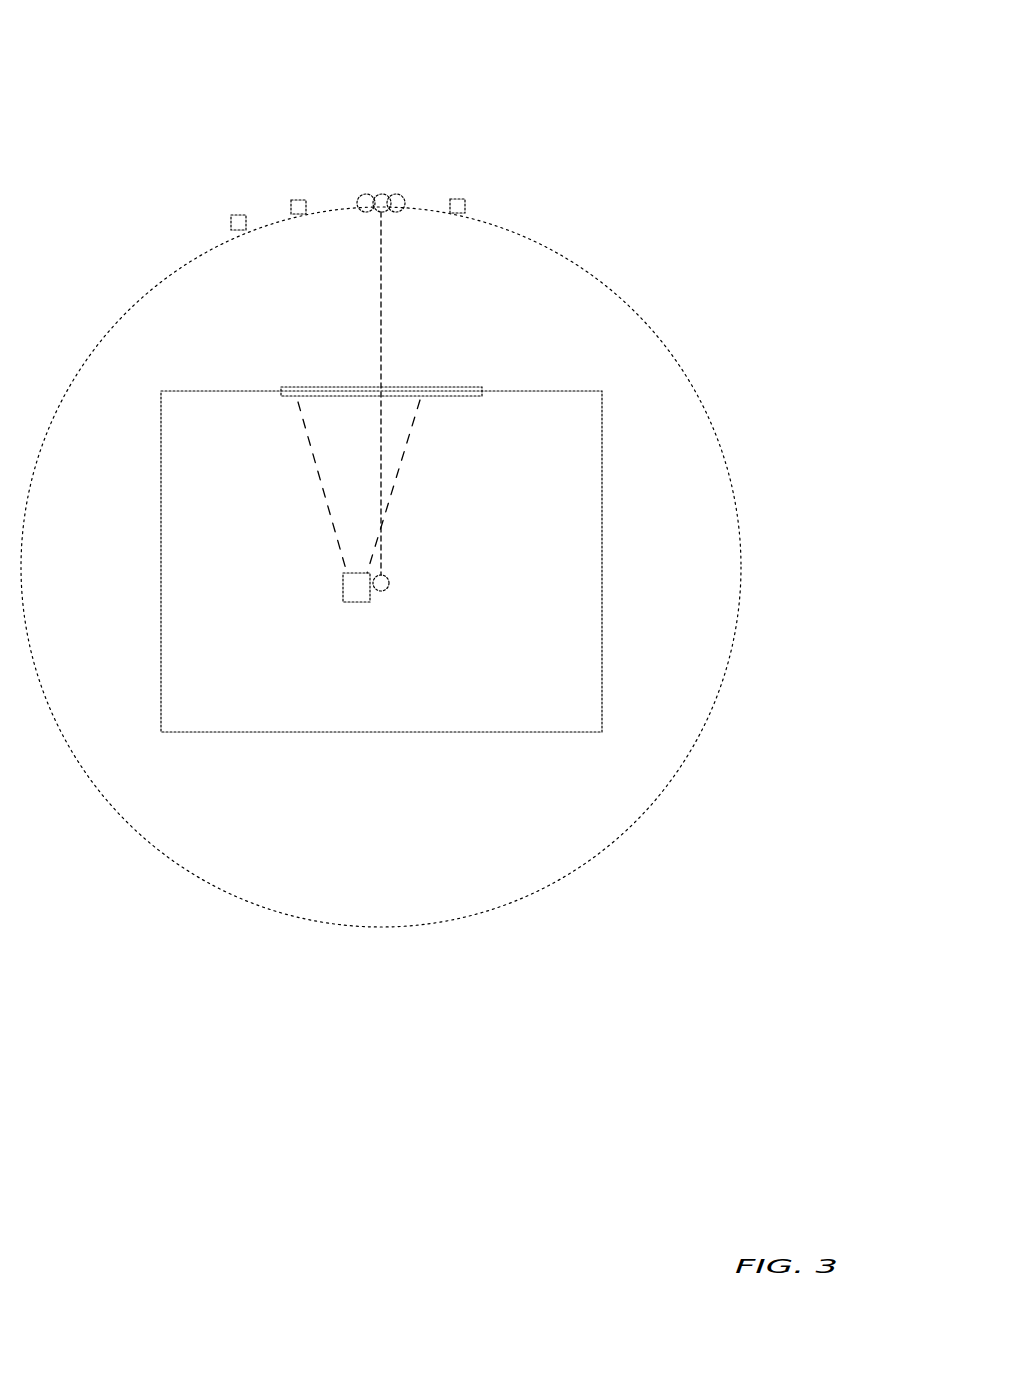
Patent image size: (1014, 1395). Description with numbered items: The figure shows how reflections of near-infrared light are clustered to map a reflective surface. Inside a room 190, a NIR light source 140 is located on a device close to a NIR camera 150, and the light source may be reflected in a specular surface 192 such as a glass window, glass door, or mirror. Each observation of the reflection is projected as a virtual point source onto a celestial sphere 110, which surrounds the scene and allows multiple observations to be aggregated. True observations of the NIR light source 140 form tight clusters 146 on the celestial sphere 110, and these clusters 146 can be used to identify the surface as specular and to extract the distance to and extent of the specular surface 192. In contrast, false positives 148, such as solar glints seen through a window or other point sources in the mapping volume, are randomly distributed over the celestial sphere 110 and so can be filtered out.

The celestial sphere 110 is at (582, 276).
The NIR light source 140 is at (389, 585).
The clusters of virtual point sources 146 is at (381, 187).
The false positives 148 is at (299, 200).
The NIR camera 150 is at (343, 589).
The room 190 is at (205, 420).
The specular surface 192 is at (320, 388).